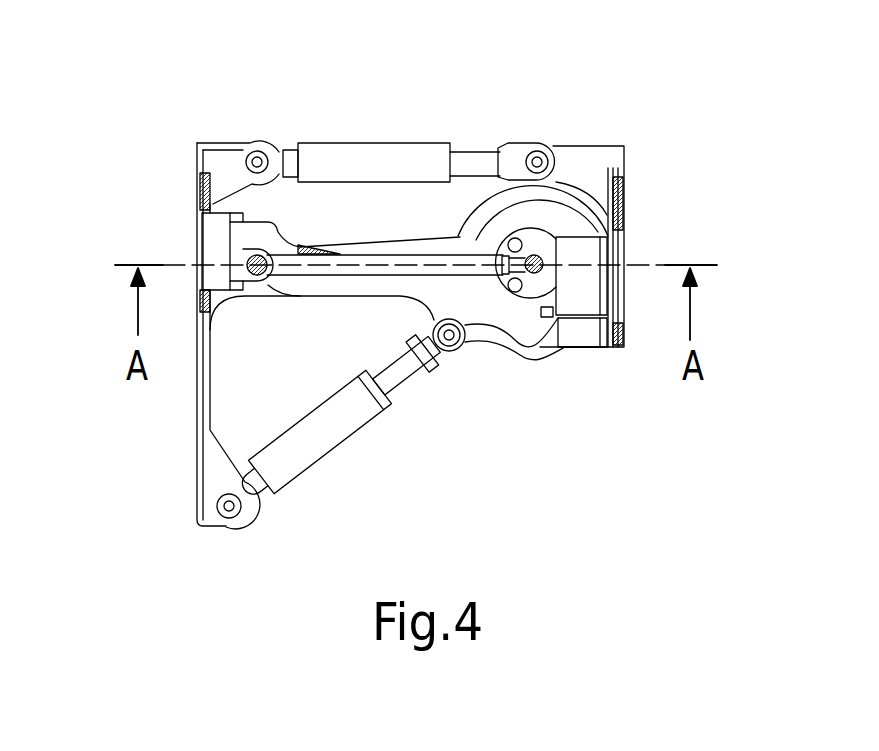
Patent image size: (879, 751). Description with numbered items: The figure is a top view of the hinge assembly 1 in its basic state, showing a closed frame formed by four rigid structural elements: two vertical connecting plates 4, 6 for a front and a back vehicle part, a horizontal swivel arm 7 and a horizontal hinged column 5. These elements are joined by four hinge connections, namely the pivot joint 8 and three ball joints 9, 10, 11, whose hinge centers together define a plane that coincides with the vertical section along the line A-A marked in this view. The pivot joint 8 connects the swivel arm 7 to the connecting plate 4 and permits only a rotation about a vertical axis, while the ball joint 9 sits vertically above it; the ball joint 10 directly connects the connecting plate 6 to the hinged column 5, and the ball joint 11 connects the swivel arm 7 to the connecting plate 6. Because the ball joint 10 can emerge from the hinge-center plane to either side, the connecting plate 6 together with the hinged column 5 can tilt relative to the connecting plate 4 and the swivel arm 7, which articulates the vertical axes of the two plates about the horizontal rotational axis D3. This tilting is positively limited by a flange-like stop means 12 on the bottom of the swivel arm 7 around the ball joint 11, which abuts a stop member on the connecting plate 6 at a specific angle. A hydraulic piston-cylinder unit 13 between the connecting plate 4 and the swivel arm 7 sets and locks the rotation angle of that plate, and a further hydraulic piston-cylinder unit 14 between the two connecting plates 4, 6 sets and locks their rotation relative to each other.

The hinge assembly 1 is at (458, 408).
The connecting plate 4 is at (202, 410).
The hinged column 5 is at (332, 265).
The connecting plate 6 is at (627, 207).
The swivel arm 7 is at (460, 290).
The pivot joint 8 is at (275, 228).
The ball joint 9 is at (226, 250).
The ball joint 10 is at (546, 238).
The ball joint 11 is at (562, 222).
The stop means 12 is at (568, 322).
The hydraulic piston-cylinder unit 13 is at (300, 447).
The hydraulic piston-cylinder unit 14 is at (390, 167).
The horizontal rotational axis D3 is at (640, 263).